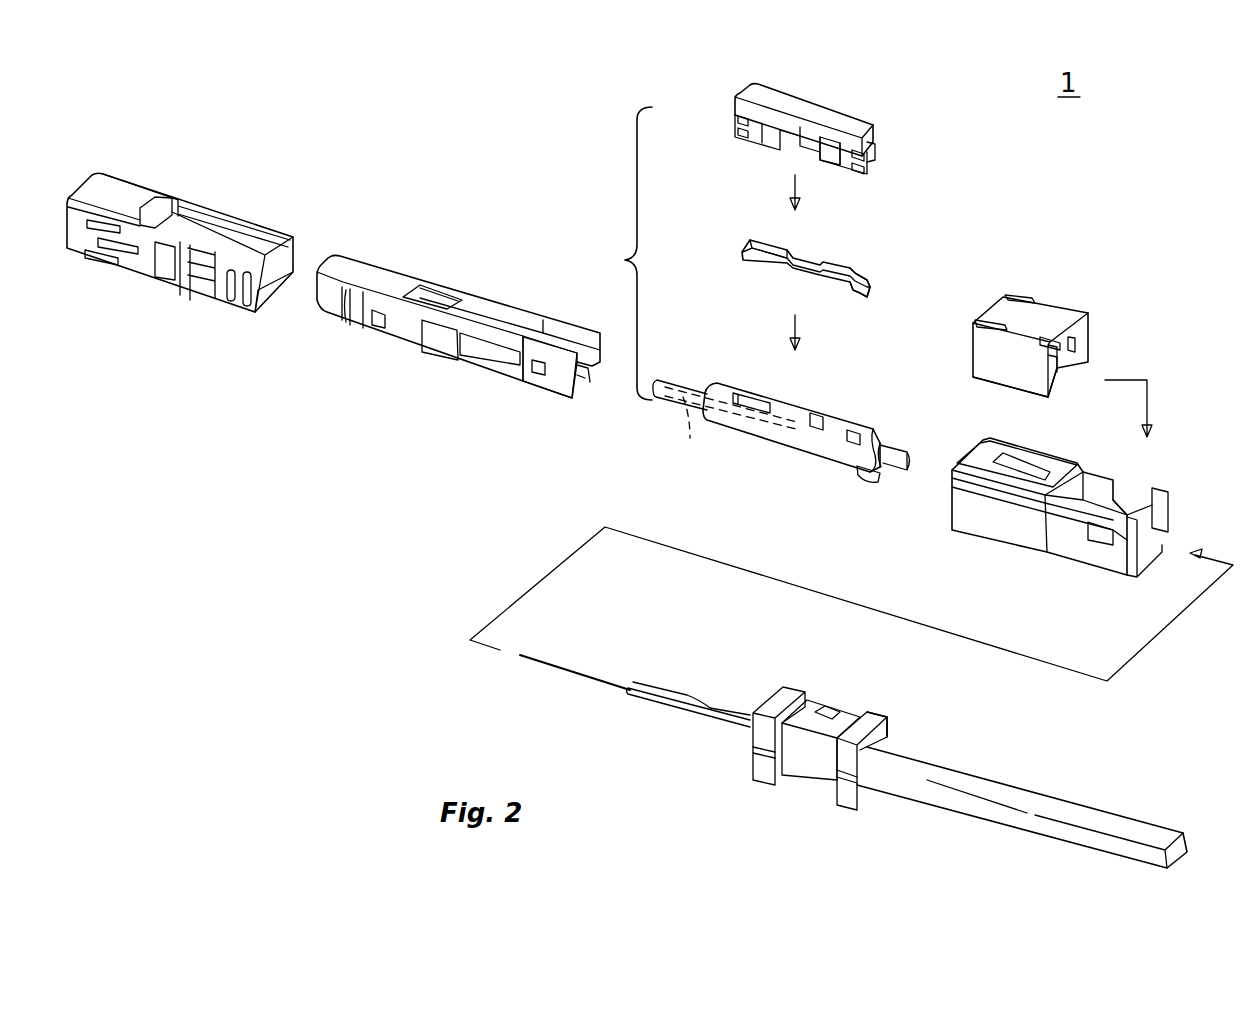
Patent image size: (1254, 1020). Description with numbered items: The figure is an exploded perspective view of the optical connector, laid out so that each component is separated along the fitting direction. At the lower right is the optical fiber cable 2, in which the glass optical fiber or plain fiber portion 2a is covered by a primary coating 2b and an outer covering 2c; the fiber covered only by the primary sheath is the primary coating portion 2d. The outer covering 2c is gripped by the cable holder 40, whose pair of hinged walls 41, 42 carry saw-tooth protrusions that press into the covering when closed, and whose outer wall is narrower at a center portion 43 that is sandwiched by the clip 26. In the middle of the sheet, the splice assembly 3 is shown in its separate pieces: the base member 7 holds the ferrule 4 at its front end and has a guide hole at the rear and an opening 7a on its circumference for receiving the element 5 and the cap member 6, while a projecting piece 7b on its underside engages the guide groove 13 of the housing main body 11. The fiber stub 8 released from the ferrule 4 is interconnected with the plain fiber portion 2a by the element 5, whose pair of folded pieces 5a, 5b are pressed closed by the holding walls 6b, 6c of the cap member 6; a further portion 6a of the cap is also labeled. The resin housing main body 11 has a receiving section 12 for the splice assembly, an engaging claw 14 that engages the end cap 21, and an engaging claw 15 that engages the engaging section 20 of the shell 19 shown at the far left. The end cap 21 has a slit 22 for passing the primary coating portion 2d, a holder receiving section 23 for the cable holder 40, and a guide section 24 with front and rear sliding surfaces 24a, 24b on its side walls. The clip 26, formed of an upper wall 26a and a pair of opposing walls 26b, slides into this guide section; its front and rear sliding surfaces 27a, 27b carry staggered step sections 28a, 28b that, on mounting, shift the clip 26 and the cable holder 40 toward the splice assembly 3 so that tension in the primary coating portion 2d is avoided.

The optical fiber cable 2 is at (1078, 798).
The plain fiber portion 2a is at (570, 670).
The primary coating 2b is at (663, 702).
The outer covering 2c is at (935, 785).
The primary coating portion 2d is at (705, 702).
The splice assembly 3 is at (629, 253).
The ferrule 4 is at (672, 382).
The element 5 is at (855, 263).
The folded piece 5a is at (758, 256).
The folded piece 5b is at (872, 280).
The cap member 6 is at (843, 103).
The engaging claw 6a is at (870, 162).
The holding wall 6b is at (828, 153).
The holding wall 6c is at (868, 151).
The base member 7 is at (877, 428).
The opening 7a is at (800, 412).
The projecting piece 7b is at (868, 476).
The fiber stub 8 is at (688, 434).
The housing main body 11 is at (407, 276).
The receiving section 12 is at (455, 305).
The guide groove 13 is at (585, 378).
The engaging claw 14 is at (540, 370).
The engaging claw 15 is at (342, 322).
The shell 19 is at (163, 184).
The engaging section 20 is at (167, 272).
The end cap 21 is at (1050, 452).
The slit 22 is at (1072, 472).
The holder receiving section 23 is at (1170, 510).
The guide section 24 is at (1130, 596).
The front sliding surface 24a is at (1085, 532).
The rear sliding surface 24b is at (1122, 523).
The clip 26 is at (1048, 295).
The upper wall 26a is at (1003, 290).
The opposing wall 26b is at (1080, 348).
The front sliding surface 27a is at (973, 335).
The rear sliding surface 27b is at (1052, 372).
The step section 28a is at (973, 370).
The step section 28b is at (1043, 382).
The cable holder 40 is at (750, 760).
The wall 41 is at (845, 805).
The wall 42 is at (885, 716).
The narrower portion 43 is at (805, 765).